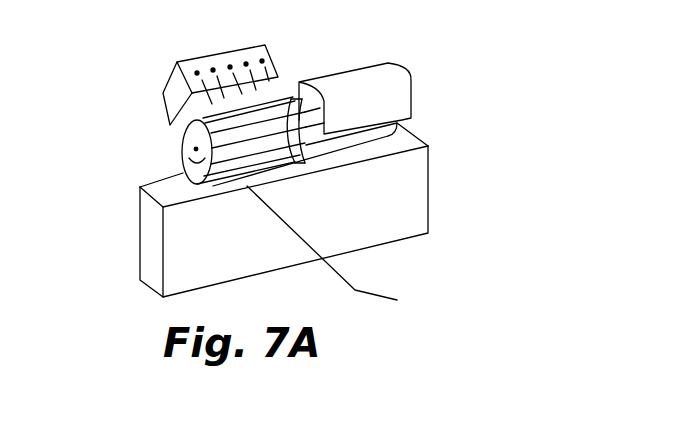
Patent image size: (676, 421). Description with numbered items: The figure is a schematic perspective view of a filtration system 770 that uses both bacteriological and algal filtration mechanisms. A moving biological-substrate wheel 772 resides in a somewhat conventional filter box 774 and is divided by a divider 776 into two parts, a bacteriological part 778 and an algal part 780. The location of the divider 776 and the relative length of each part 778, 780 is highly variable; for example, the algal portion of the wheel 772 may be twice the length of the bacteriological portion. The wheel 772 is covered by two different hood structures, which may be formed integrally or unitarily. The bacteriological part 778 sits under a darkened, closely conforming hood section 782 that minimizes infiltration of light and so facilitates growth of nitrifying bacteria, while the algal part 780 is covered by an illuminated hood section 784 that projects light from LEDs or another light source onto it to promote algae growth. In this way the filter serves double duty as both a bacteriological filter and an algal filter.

The filtration system 770 is at (460, 153).
The wheel 772 is at (177, 155).
The filter box 774 is at (340, 233).
The divider 776 is at (303, 170).
The bacteriological part 778 is at (393, 124).
The algal part 780 is at (346, 256).
The drive housing 782 is at (388, 92).
The illuminated hood section 784 is at (270, 56).